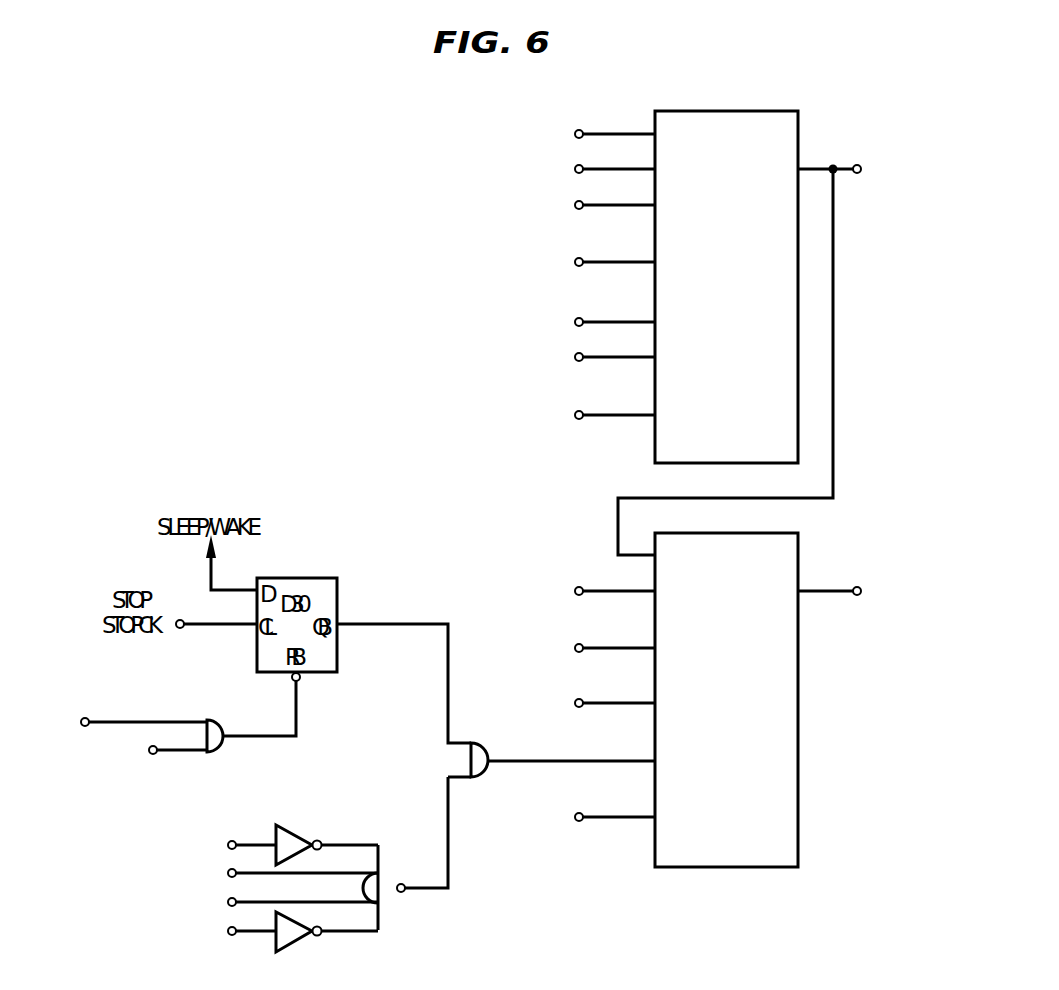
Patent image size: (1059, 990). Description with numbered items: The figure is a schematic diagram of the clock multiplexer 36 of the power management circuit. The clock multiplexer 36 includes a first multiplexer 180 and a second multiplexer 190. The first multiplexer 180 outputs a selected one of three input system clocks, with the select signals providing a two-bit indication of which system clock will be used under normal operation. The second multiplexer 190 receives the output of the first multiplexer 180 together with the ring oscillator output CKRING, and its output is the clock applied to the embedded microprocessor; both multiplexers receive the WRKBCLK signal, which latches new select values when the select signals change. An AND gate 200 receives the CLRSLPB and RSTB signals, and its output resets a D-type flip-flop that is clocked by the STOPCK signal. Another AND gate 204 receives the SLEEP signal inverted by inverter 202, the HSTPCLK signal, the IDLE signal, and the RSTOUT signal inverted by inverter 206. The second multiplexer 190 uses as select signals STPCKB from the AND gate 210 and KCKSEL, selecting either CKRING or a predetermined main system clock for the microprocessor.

The clock multiplexer 36 is at (298, 256).
The first multiplexer 180 is at (745, 110).
The second multiplexer 190 is at (798, 740).
The AND gate 200 is at (218, 748).
The inverter 202 is at (278, 832).
The AND gate 204 is at (390, 902).
The inverter 206 is at (300, 950).
The AND gate 210 is at (480, 778).